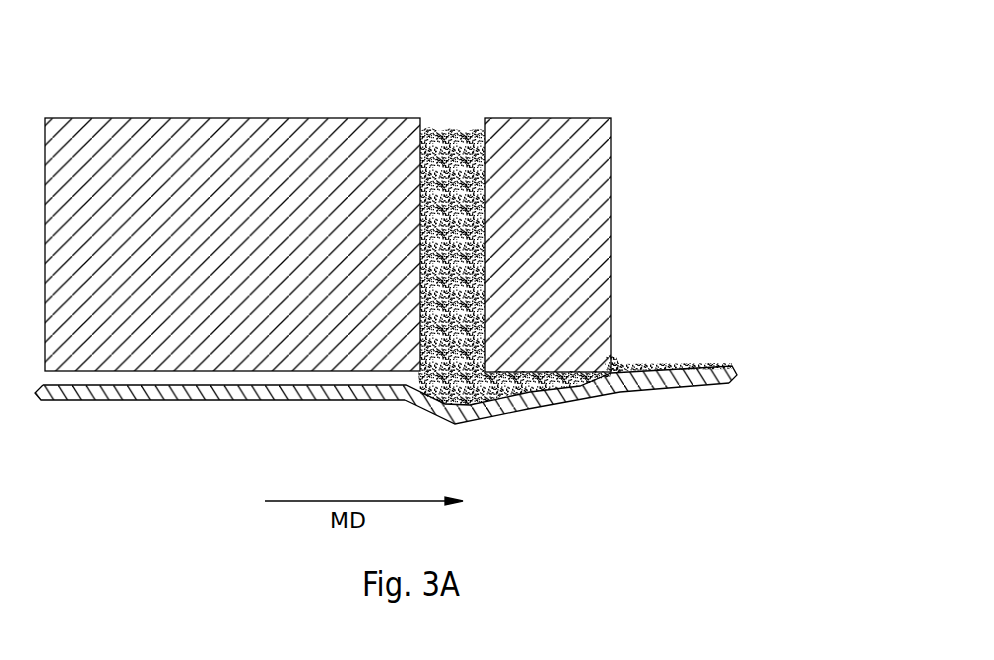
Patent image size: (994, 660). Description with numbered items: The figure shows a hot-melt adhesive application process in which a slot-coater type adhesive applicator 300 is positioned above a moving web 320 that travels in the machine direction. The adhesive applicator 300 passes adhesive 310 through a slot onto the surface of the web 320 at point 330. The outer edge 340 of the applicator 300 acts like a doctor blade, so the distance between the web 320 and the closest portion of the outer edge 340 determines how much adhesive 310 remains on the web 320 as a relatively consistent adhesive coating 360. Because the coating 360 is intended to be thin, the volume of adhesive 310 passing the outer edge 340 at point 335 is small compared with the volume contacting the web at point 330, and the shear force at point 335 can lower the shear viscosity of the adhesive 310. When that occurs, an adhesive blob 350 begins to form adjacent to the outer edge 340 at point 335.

The slot-coater type adhesive applicator 300 is at (440, 278).
The adhesive 310 is at (450, 132).
The moving web 320 is at (382, 449).
The point 330 is at (520, 447).
The point 335 is at (628, 411).
The outer edge 340 is at (610, 270).
The adhesive blob 350 is at (611, 364).
The adhesive coating 360 is at (725, 367).